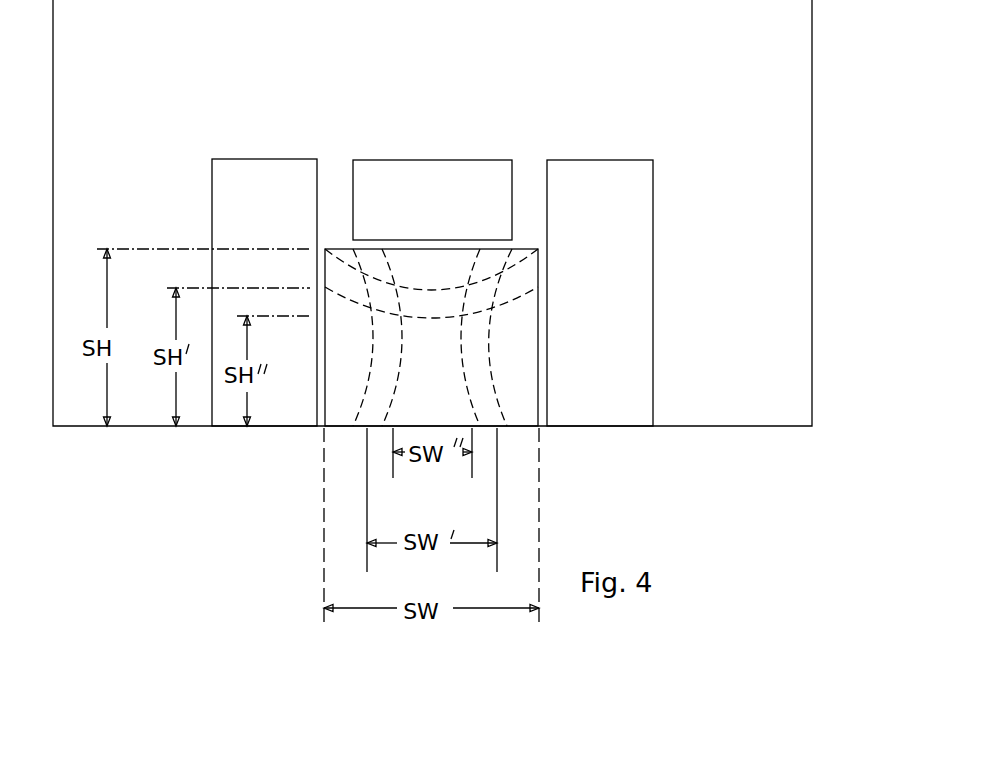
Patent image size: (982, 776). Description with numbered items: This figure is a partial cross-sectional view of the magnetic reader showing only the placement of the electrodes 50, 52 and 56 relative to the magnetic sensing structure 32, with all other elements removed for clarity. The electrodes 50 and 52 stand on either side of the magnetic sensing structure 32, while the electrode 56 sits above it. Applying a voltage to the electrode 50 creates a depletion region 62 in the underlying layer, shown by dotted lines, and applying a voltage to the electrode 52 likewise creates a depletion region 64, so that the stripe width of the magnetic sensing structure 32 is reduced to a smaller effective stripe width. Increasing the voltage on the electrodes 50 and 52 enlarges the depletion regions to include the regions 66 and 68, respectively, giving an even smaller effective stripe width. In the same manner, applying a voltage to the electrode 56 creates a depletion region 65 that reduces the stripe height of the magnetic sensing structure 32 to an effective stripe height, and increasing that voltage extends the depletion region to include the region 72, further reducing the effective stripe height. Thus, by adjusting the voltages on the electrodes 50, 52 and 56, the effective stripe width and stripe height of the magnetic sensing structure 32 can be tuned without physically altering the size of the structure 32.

The magnetic sensing structure 32 is at (447, 387).
The electrode 50 is at (247, 213).
The electrode 52 is at (585, 224).
The electrode 56 is at (384, 206).
The depletion region 62 is at (343, 411).
The depletion region 64 is at (515, 413).
The depletion region 65 is at (467, 260).
The depletion region 66 is at (373, 418).
The depletion region 68 is at (487, 418).
The depletion region 72 is at (434, 303).